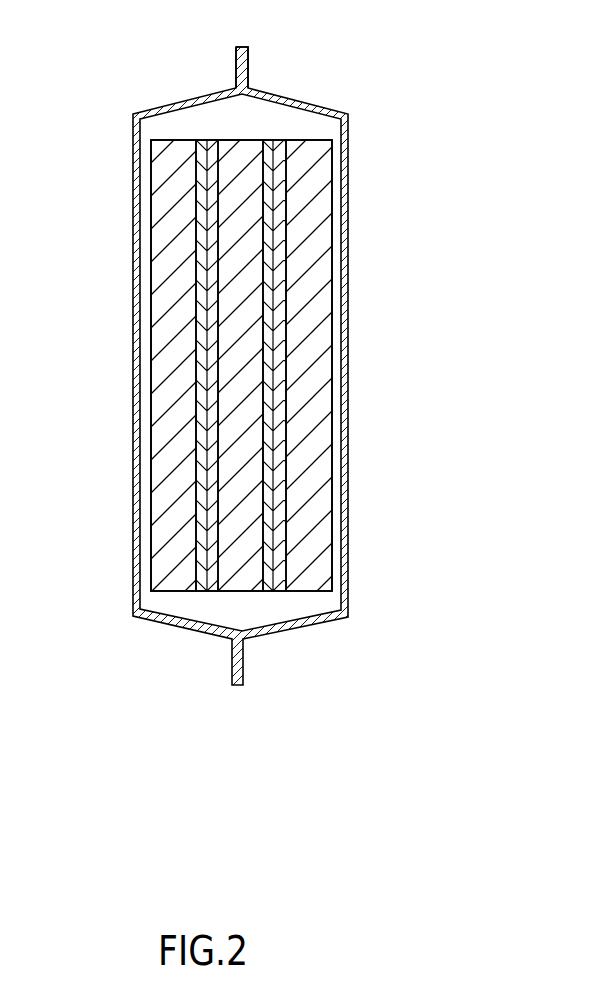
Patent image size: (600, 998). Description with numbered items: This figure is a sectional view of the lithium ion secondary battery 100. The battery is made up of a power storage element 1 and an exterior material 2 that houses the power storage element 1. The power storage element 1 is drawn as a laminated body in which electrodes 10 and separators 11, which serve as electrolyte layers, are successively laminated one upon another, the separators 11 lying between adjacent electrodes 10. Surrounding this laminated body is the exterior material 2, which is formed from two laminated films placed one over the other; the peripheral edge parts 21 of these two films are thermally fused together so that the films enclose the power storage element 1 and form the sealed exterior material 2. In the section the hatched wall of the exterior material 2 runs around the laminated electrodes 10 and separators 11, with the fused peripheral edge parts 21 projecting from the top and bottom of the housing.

The lithium ion secondary battery 100 is at (110, 85).
The power storage element 1 is at (225, 675).
The electrodes 10 is at (163, 592).
The separators 11 is at (200, 592).
The exterior material 2 is at (327, 104).
The peripheral edge parts 21 is at (249, 67).